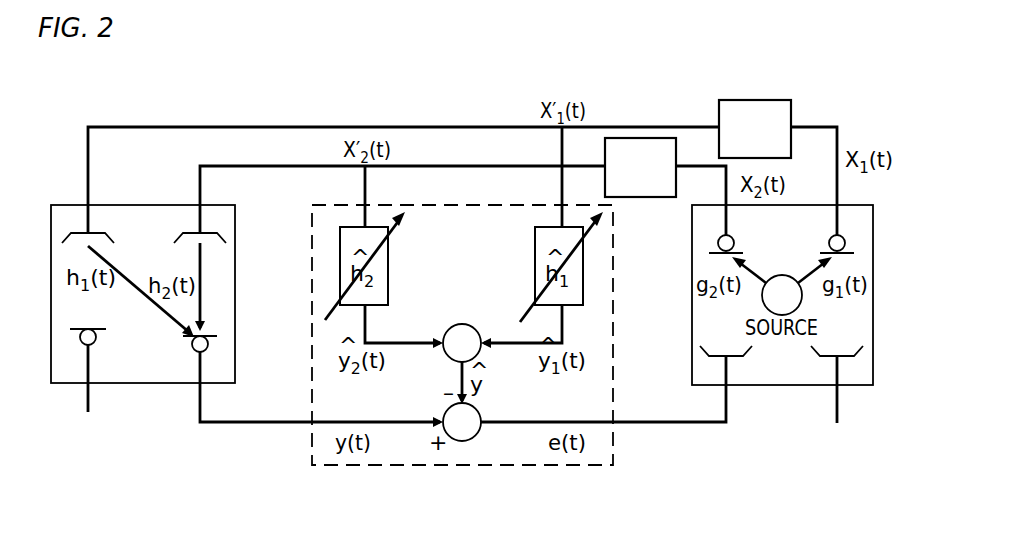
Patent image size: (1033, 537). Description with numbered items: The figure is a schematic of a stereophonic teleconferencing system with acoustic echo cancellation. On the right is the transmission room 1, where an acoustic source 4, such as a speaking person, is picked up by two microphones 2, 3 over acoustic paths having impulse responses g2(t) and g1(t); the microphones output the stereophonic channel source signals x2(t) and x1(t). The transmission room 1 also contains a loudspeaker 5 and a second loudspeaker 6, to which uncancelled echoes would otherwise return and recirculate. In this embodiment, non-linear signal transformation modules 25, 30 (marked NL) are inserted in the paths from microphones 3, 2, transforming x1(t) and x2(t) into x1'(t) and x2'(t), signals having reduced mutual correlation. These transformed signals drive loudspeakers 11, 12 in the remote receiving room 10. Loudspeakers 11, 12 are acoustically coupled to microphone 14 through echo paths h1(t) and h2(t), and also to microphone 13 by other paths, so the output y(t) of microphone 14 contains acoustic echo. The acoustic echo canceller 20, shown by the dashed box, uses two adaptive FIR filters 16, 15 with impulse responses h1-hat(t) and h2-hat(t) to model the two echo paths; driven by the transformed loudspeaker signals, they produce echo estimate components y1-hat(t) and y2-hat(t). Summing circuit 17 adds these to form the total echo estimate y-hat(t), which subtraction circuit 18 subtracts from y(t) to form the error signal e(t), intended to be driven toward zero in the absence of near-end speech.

The transmission room 1 is at (874, 250).
The microphone 2 is at (730, 237).
The microphone 3 is at (841, 237).
The acoustic source 4 is at (783, 276).
The loudspeaker 5 is at (720, 360).
The antenna 6 is at (831, 360).
The receiving room 10 is at (236, 250).
The loudspeaker 11 is at (90, 237).
The loudspeaker 12 is at (202, 237).
The microphone 13 is at (80, 345).
The microphone 14 is at (192, 351).
The adaptive FIR filter 15 is at (399, 248).
The adaptive FIR filter 16 is at (533, 253).
The summing circuit 17 is at (448, 357).
The subtraction circuit 18 is at (479, 409).
The acoustic echo canceller 20 is at (312, 466).
The non-linear signal transformation module 25 is at (791, 107).
The non-linear signal transformation module 30 is at (676, 149).